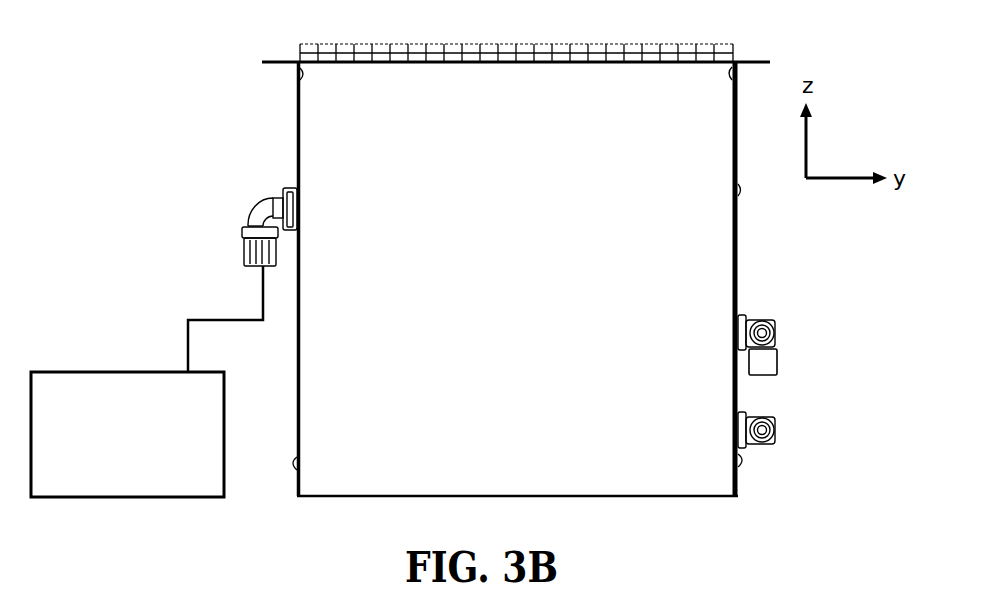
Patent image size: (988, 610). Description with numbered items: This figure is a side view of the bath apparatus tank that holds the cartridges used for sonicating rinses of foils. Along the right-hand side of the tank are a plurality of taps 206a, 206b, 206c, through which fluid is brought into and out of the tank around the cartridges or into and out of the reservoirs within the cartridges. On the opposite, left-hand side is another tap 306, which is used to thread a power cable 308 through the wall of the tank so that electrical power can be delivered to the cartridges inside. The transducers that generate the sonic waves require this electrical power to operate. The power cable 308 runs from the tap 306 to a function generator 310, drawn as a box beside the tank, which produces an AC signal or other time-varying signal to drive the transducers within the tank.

The tap 306 is at (252, 207).
The power cable 308 is at (212, 318).
The function generator 310 is at (127, 434).
The tap 206a is at (775, 325).
The tap 206b is at (777, 431).
The tap 206c is at (777, 361).